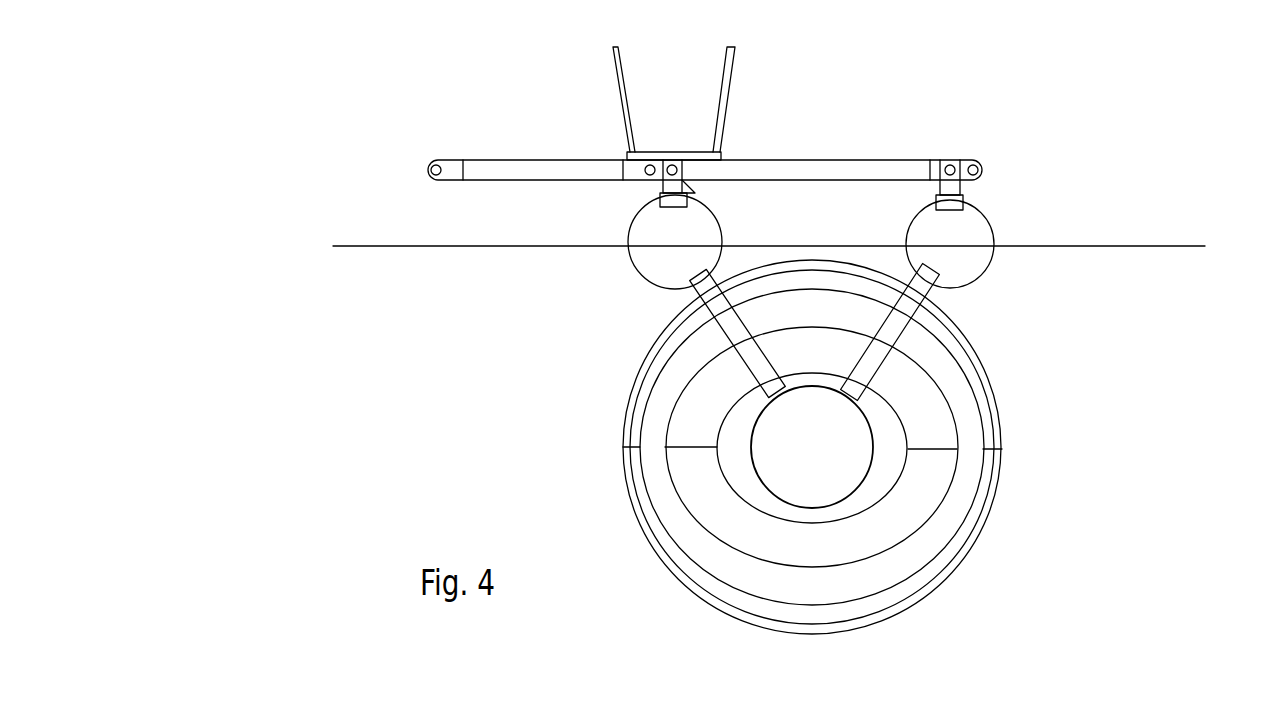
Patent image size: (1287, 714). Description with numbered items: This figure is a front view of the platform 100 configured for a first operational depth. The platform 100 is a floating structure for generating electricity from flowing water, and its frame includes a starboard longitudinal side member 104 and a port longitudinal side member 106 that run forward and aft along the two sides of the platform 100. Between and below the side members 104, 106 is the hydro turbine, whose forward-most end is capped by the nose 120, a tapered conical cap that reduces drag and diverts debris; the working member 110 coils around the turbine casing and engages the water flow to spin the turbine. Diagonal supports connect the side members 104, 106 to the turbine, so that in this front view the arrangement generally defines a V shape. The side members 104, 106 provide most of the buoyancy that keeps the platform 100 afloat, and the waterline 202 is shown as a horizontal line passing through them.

The platform 100 is at (427, 130).
The starboard longitudinal side member 104 is at (630, 238).
The port longitudinal side member 106 is at (962, 232).
The working member 110 is at (948, 488).
The nose 120 is at (765, 452).
The waterline 202 is at (1146, 264).